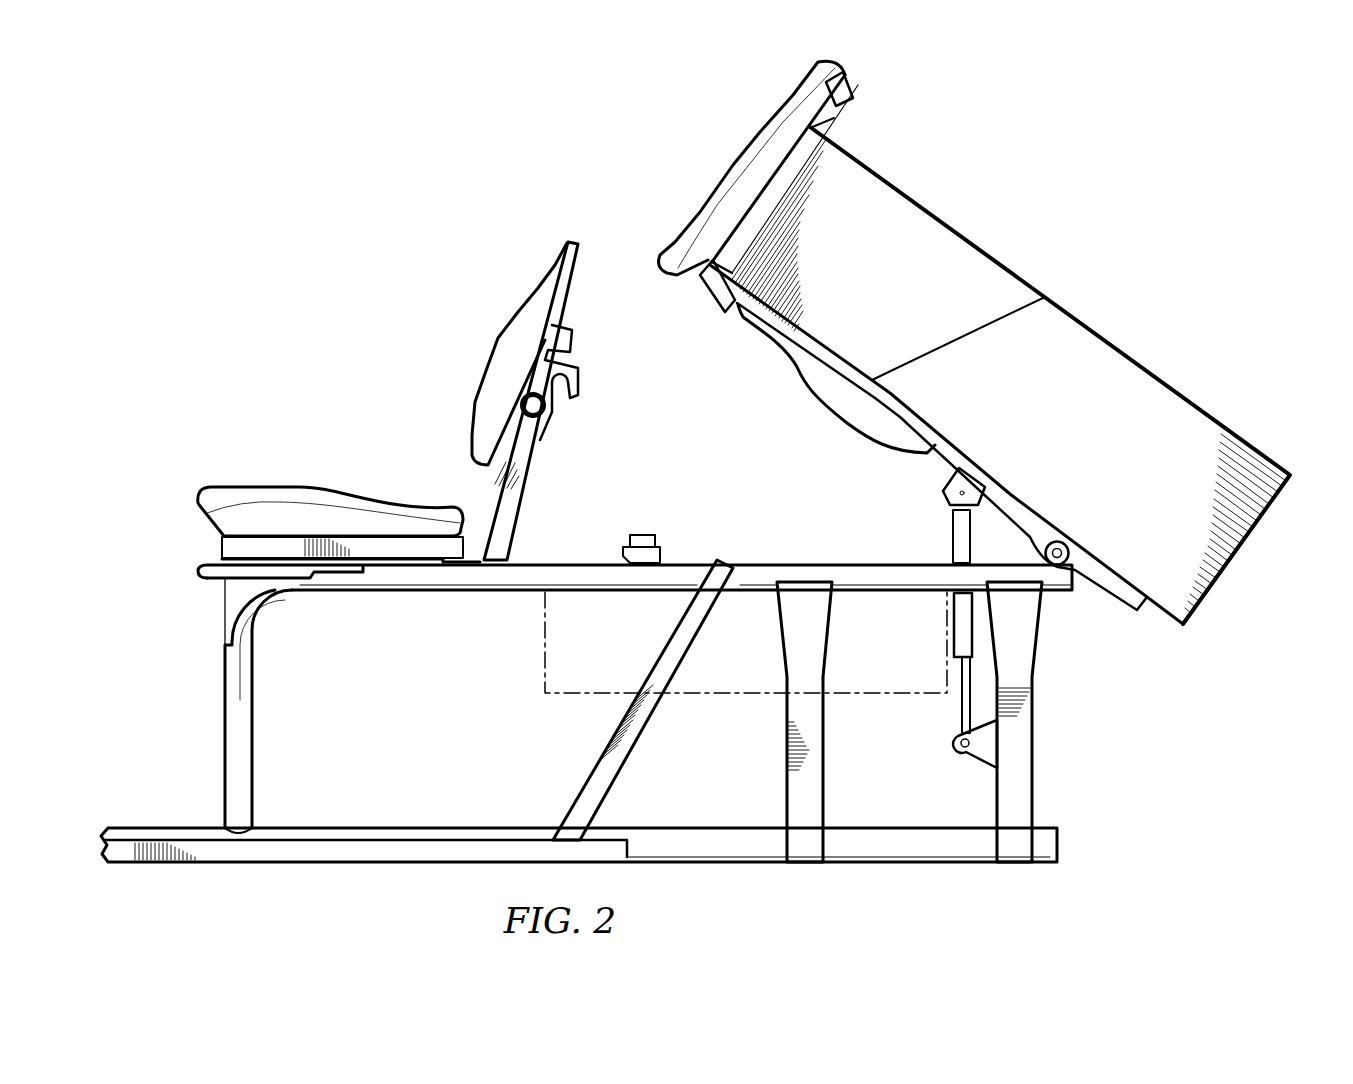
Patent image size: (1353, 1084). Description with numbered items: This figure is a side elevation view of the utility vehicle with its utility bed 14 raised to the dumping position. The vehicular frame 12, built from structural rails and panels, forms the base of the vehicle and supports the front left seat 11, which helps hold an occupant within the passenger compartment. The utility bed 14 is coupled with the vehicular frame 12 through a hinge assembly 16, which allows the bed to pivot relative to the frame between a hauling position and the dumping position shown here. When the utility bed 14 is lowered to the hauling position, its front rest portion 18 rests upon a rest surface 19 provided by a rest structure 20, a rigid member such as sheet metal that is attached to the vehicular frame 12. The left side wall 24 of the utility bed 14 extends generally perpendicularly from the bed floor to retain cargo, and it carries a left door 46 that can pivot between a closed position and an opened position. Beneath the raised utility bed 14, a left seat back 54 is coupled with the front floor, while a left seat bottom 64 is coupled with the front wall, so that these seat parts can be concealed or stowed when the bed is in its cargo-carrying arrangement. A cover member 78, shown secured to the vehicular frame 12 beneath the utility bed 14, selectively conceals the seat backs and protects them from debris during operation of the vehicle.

The front left seat 11 is at (288, 228).
The vehicular frame 12 is at (812, 884).
The utility bed 14 is at (1262, 655).
The hinge assembly 16 is at (1088, 608).
The front rest portion 18 is at (712, 305).
The rest surface 19 is at (645, 533).
The rest structure 20 is at (608, 542).
The left side wall 24 is at (1082, 262).
The left door 46 is at (895, 178).
The left seat back 54 is at (848, 422).
The left seat bottom 64 is at (740, 152).
The cover member 78 is at (860, 697).